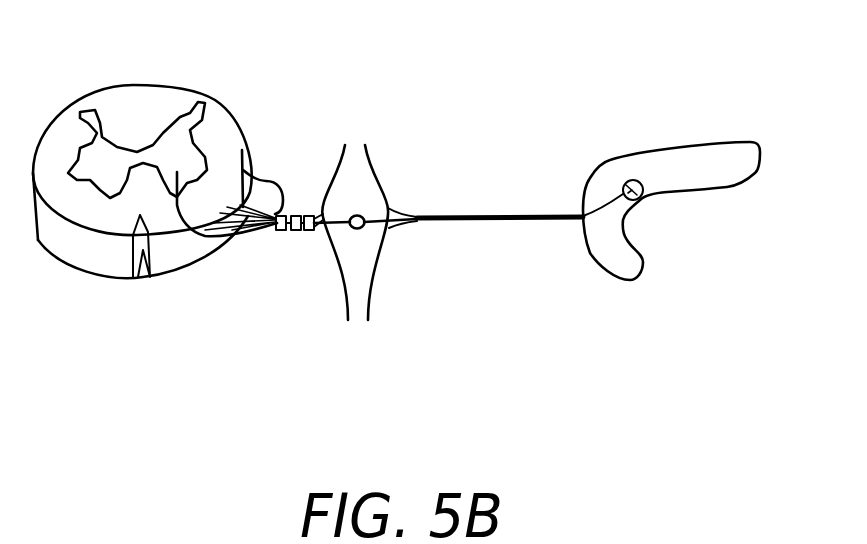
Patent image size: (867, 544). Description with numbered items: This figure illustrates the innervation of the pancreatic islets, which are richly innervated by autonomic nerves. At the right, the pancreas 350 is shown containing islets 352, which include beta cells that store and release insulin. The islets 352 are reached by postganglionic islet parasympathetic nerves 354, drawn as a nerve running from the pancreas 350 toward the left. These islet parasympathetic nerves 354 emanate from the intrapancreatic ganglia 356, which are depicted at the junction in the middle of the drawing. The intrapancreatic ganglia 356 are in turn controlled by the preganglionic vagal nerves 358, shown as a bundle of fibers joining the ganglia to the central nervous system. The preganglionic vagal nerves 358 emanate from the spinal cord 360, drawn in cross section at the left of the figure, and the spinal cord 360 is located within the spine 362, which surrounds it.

The pancreas 350 is at (640, 153).
The islets 352 is at (641, 198).
The islet parasympathetic nerves 354 is at (465, 213).
The intrapancreatic ganglia 356 is at (363, 237).
The preganglionic vagal nerves 358 is at (295, 238).
The spinal cord 360 is at (180, 168).
The spine 362 is at (133, 87).